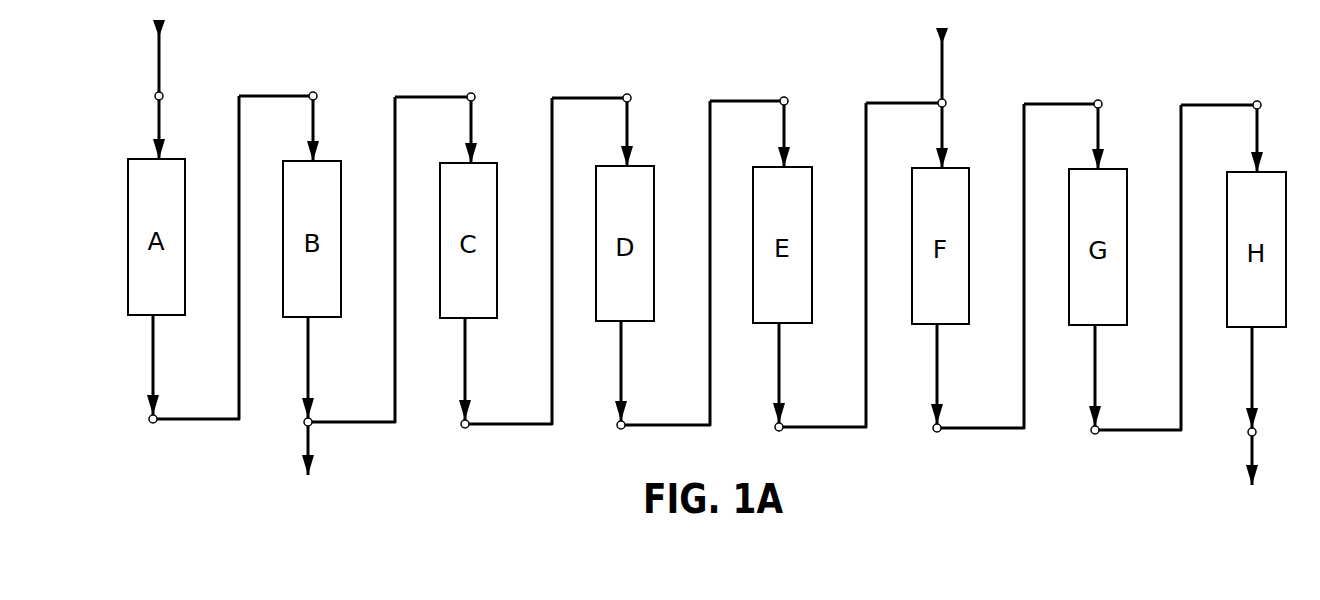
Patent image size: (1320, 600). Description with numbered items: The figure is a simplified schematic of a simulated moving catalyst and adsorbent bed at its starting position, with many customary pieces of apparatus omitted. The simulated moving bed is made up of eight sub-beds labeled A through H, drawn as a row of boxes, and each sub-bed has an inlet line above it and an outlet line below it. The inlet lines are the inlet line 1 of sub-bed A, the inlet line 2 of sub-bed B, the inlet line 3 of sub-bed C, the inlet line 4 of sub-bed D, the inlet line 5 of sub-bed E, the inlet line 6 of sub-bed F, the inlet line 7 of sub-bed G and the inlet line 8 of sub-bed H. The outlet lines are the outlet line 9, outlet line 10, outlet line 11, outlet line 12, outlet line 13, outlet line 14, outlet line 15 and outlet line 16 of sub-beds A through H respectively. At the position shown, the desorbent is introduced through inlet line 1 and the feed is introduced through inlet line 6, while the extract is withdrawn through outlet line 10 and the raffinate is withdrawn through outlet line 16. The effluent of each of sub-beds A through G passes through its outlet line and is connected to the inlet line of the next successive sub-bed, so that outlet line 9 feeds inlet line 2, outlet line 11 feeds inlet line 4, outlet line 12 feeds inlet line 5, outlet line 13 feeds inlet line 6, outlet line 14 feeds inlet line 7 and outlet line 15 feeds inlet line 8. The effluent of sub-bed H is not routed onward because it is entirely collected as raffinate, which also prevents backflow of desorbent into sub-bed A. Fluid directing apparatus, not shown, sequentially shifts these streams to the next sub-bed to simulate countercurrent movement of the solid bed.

The inlet line 1 is at (158, 120).
The inlet line 2 is at (312, 120).
The inlet line 3 is at (470, 121).
The inlet line 4 is at (626, 122).
The inlet line 5 is at (783, 125).
The inlet line 6 is at (941, 127).
The inlet line 7 is at (1097, 128).
The inlet line 8 is at (1256, 129).
The outlet line 9 is at (155, 360).
The outlet line 10 is at (310, 363).
The outlet line 11 is at (467, 365).
The outlet line 12 is at (623, 366).
The outlet line 13 is at (781, 368).
The outlet line 14 is at (939, 369).
The outlet line 15 is at (1097, 371).
The outlet line 16 is at (1254, 373).